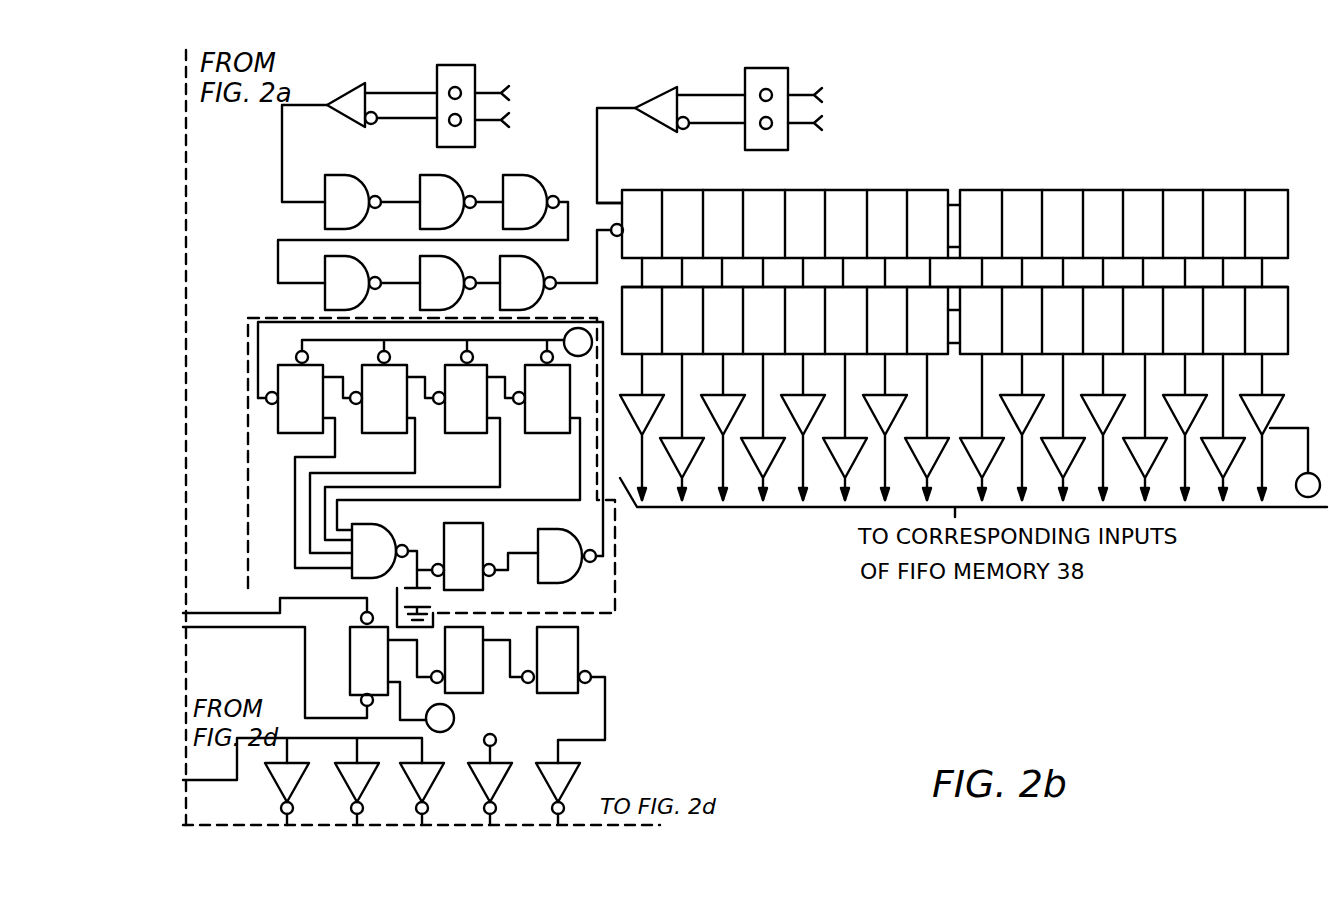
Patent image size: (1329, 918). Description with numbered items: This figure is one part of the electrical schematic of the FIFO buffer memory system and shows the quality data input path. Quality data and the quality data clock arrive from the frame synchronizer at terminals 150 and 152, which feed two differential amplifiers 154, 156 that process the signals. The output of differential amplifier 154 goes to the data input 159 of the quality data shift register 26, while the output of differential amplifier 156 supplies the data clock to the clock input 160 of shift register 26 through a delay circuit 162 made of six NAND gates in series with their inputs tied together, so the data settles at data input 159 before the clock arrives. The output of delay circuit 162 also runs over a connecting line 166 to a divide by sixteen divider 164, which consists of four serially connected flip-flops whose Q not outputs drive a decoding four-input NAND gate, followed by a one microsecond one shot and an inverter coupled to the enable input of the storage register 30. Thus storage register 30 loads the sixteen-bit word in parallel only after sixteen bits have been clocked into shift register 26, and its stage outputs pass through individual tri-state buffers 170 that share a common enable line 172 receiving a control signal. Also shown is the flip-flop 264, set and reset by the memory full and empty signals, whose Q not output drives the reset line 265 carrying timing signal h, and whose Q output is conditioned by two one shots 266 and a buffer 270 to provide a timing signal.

The quality data shift register 26 is at (955, 260).
The storage register 30 is at (901, 335).
The terminal 150 is at (790, 72).
The terminal 152 is at (478, 72).
The differential amplifier 154 is at (668, 90).
The differential amplifier 156 is at (360, 85).
The data input 159 is at (622, 203).
The clock input 160 is at (615, 237).
The delay circuit 162 is at (384, 168).
The divide by 16 divider 164 is at (618, 573).
The connecting line 166 is at (248, 384).
The tri-state buffers 170 is at (1300, 387).
The common enable line 172 is at (1308, 470).
The flip-flop 264 is at (338, 665).
The reset line 265 is at (400, 697).
The one shots 266 is at (609, 651).
The buffer 270 is at (575, 780).